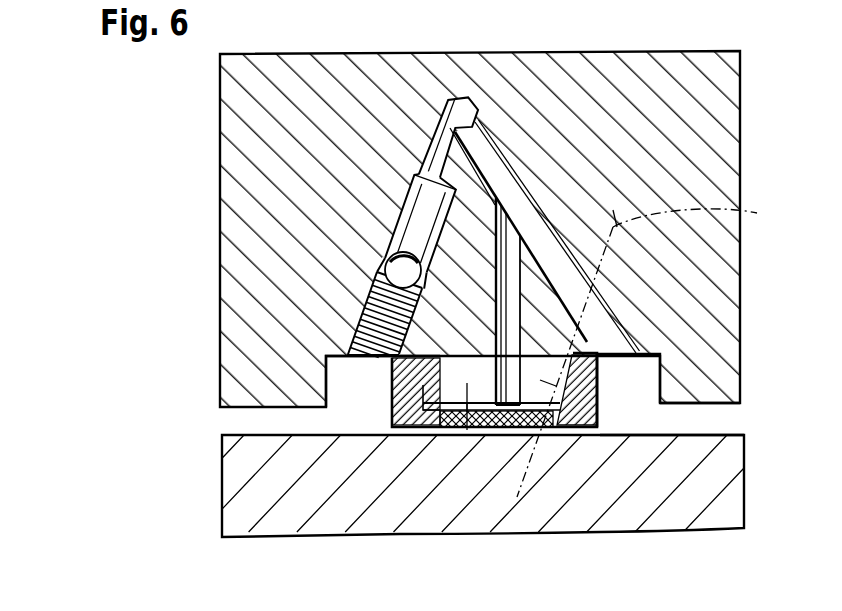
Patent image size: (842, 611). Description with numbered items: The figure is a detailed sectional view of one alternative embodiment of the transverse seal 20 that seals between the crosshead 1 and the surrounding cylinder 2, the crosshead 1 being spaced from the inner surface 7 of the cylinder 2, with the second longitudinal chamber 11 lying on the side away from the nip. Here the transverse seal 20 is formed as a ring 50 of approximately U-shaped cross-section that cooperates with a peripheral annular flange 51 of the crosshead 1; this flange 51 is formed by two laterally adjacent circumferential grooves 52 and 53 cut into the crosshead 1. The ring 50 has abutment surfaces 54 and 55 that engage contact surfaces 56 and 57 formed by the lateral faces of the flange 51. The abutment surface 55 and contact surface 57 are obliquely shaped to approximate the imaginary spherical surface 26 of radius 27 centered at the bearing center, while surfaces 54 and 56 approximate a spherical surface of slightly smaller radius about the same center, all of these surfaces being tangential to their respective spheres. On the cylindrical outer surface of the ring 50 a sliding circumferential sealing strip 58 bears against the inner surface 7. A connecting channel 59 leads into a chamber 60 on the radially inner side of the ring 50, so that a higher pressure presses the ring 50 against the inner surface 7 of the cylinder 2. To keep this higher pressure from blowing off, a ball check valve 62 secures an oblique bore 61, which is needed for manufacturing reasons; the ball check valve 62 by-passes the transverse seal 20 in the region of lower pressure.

The crosshead 1 is at (247, 115).
The cylinder 2 is at (247, 499).
The inner surface of cylinder 7 is at (712, 420).
The second longitudinal chamber 11 is at (723, 410).
The transverse seal 20 is at (636, 389).
The imaginary spherical surface 26 is at (757, 213).
The radius 27 is at (546, 382).
The ring 50 is at (352, 412).
The peripheral annular flange 51 is at (470, 410).
The circumferential groove 52 is at (373, 362).
The circumferential groove 53 is at (622, 360).
The abutment surface 54 is at (420, 408).
The abutment surface 55 is at (573, 377).
The contact surface 56 is at (455, 412).
The contact surface 57 is at (602, 360).
The sliding circumferential sealing strip 58 is at (505, 415).
The connecting channel 59 is at (600, 315).
The chamber 60 is at (467, 383).
The oblique bore 61 is at (400, 216).
The ball check valve 62 is at (371, 261).